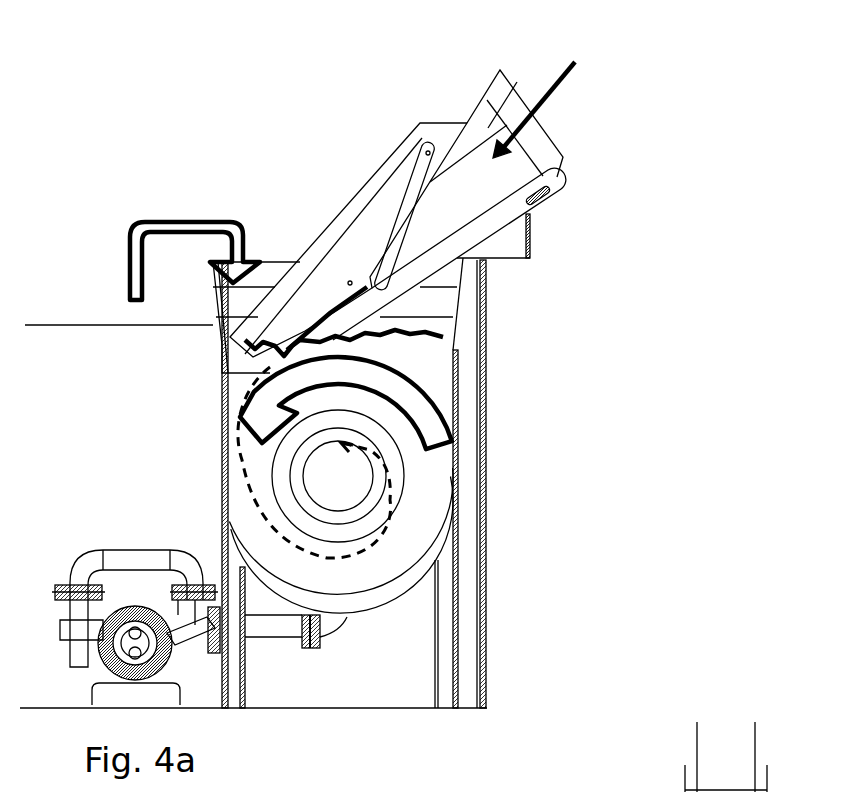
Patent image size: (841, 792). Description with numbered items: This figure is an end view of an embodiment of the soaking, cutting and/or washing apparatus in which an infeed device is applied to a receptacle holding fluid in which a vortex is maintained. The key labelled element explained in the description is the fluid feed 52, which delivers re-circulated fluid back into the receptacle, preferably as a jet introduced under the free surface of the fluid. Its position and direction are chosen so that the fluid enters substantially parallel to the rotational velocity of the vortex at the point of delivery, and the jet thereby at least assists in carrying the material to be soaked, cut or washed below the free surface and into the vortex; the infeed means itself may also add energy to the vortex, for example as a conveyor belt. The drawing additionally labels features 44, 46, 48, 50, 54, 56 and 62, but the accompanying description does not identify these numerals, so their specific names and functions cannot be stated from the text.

The support bar / chute bracket 44 is at (495, 220).
The first chute 46 is at (388, 202).
The second chute / feed chute 48 is at (487, 130).
The material flow 50 is at (428, 335).
The fluid feed 52 is at (185, 209).
The rotation direction arrow 54 is at (432, 416).
The drum rotation path 56 is at (372, 558).
The feed direction arrow 62 is at (606, 181).